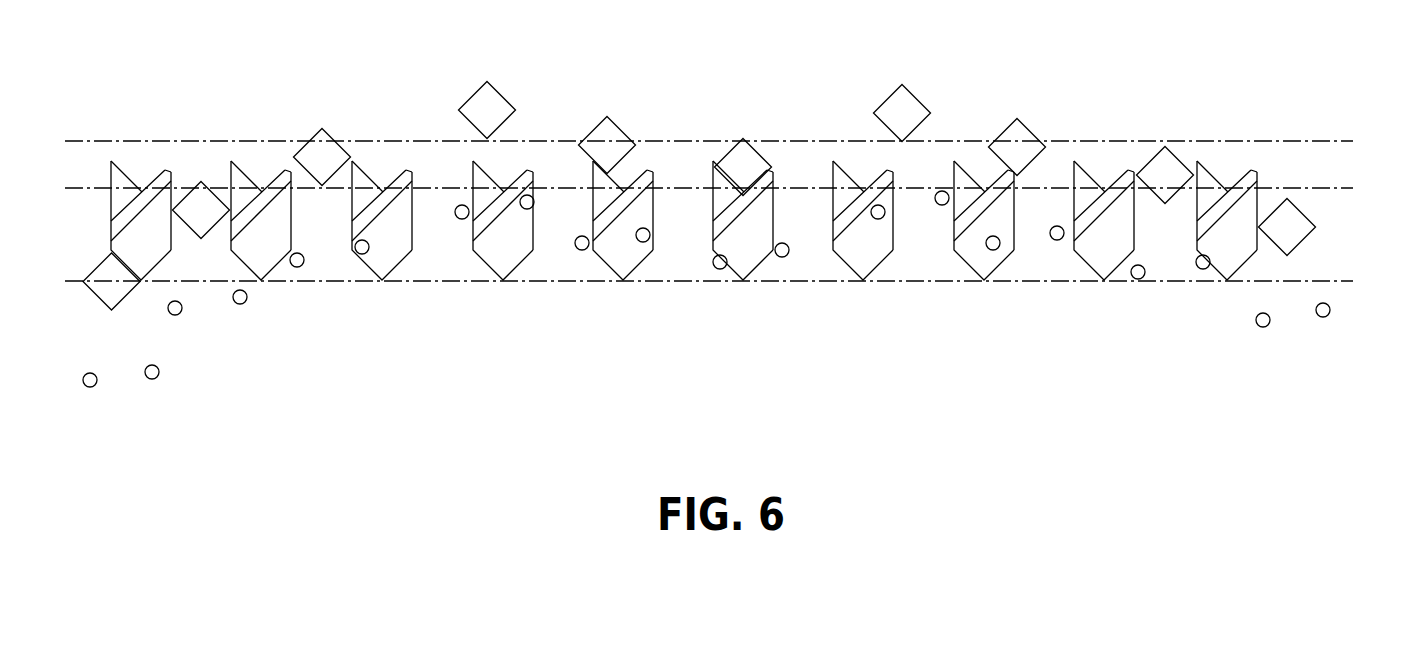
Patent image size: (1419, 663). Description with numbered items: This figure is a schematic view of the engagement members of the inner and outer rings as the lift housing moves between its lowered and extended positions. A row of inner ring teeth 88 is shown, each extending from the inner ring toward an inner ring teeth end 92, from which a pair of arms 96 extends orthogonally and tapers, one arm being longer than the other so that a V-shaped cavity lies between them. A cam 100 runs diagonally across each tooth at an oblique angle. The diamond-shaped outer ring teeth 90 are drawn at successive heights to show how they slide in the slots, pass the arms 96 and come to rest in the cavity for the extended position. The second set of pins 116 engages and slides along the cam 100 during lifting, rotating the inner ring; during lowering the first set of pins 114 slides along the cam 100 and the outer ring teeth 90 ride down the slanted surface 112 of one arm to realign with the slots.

The inner ring teeth 88 is at (701, 211).
The outer ring teeth 90 is at (320, 150).
The inner ring teeth end 92 is at (140, 187).
The arms 96 is at (110, 175).
The cam 100 is at (270, 183).
The slanted surface 112 is at (171, 173).
The first set of pins 114 is at (180, 312).
The second set of pins 116 is at (242, 303).